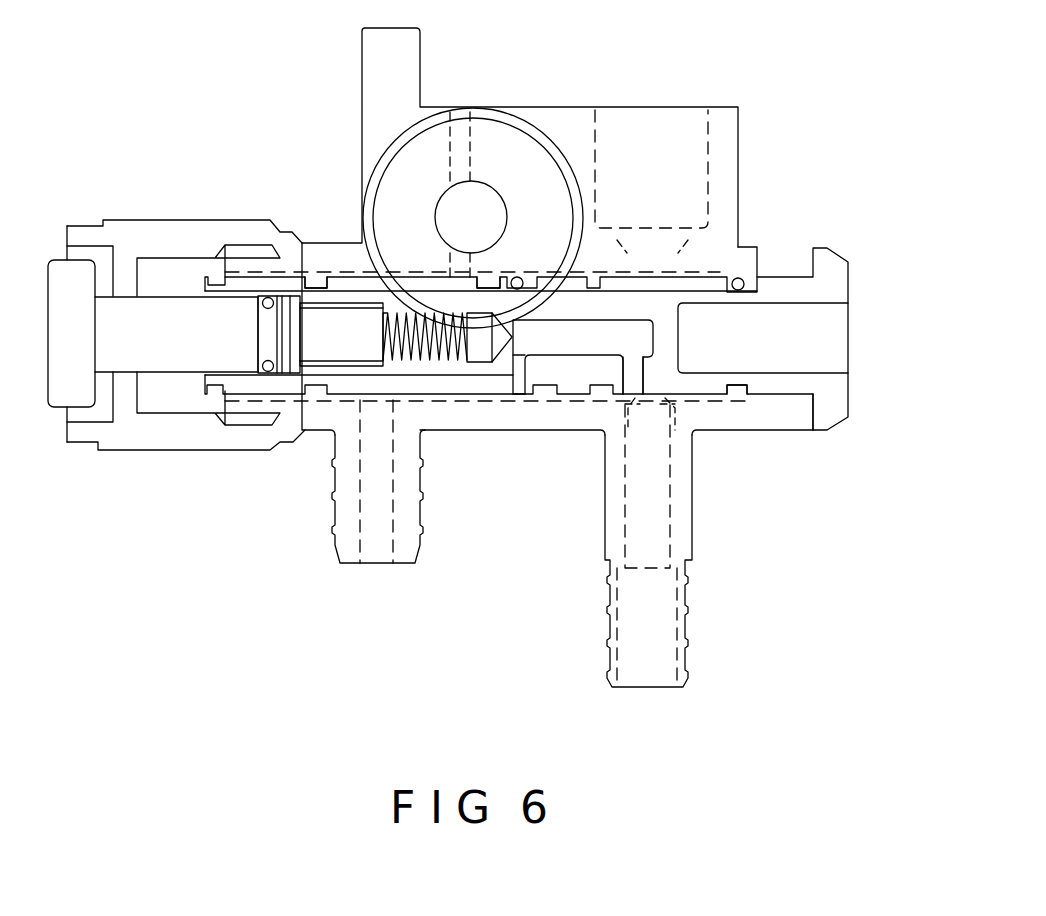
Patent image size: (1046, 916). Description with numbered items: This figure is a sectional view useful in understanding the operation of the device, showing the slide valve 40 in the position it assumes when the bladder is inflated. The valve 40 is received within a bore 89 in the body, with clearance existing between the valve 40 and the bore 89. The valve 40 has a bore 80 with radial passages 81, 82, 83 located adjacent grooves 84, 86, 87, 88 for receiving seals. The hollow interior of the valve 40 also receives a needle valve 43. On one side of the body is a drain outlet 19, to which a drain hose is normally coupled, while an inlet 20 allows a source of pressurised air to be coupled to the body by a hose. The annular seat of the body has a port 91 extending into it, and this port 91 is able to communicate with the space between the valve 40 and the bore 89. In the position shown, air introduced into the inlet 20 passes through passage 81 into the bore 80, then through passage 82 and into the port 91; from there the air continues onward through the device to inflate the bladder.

The drain outlet 19 is at (415, 553).
The inlet 20 is at (687, 623).
The slide valve 40 is at (838, 413).
The needle valve 43 is at (484, 362).
The bore 80 is at (583, 357).
The radial passage 81 is at (644, 368).
The radial passage 82 is at (513, 393).
The radial passage 83 is at (449, 366).
The groove 84 is at (742, 396).
The groove 86 is at (547, 383).
The groove 87 is at (491, 280).
The groove 88 is at (320, 280).
The bore 89 is at (290, 267).
The port 91 is at (523, 278).